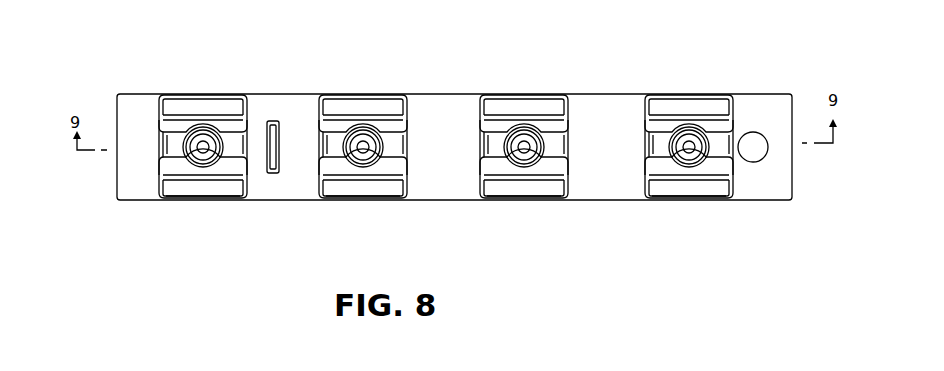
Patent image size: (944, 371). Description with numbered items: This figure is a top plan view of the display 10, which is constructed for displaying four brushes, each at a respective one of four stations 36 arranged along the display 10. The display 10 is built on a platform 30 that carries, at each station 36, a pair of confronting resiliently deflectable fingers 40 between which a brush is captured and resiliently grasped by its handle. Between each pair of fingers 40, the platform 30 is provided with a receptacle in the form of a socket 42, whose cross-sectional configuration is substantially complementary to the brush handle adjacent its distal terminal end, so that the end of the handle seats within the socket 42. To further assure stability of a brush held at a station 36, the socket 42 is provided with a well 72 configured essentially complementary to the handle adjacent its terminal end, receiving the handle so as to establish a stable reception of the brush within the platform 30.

The display 10 is at (446, 137).
The platform 30 is at (434, 90).
The station 36 is at (693, 201).
The resiliently deflectable finger 40 is at (664, 192).
The socket 42 is at (383, 147).
The well 72 is at (215, 148).